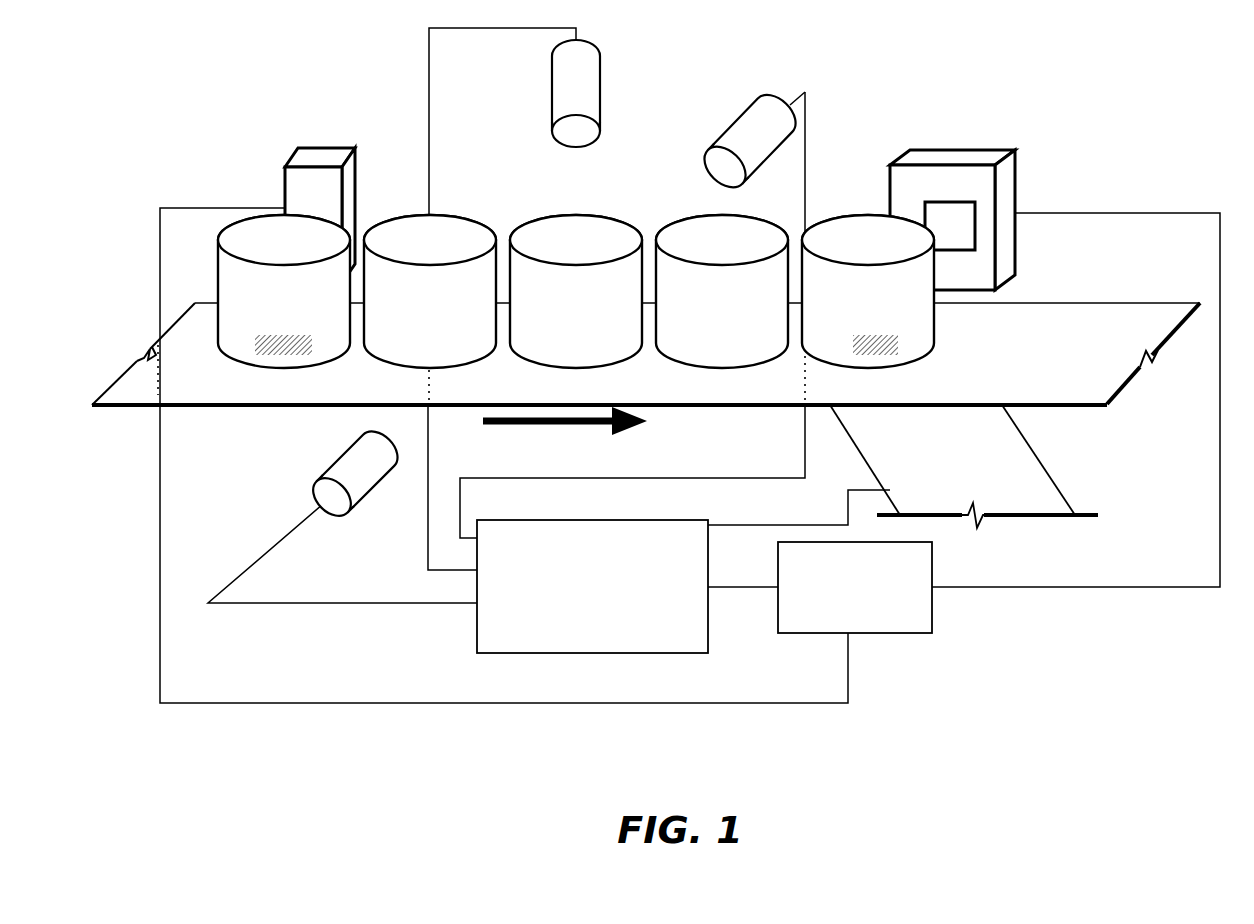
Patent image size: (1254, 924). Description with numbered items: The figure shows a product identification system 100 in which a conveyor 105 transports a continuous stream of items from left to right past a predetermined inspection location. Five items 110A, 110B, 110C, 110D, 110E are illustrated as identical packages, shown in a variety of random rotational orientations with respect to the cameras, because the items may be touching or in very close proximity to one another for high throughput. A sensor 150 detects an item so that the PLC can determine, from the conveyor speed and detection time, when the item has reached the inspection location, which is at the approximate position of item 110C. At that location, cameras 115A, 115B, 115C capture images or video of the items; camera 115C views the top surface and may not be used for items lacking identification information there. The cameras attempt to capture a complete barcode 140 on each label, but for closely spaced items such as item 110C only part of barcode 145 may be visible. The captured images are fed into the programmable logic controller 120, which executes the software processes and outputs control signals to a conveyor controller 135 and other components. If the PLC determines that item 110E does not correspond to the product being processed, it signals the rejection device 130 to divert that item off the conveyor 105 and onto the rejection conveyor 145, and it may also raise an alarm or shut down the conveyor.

The system 100 is at (133, 93).
The conveyor 105 is at (120, 408).
The item 110A is at (255, 222).
The item 110B is at (402, 218).
The item 110C is at (540, 222).
The item 110D is at (680, 222).
The item 110E is at (868, 222).
The camera 115A is at (752, 105).
The camera 115B is at (345, 458).
The camera 115C is at (555, 82).
The programmable logic controller (PLC) 120 is at (574, 612).
The rejection device 130 is at (965, 158).
The conveyor controller 135 is at (840, 617).
The barcode 140 is at (258, 348).
The rejection conveyor 145 is at (1048, 477).
The sensor 150 is at (325, 158).